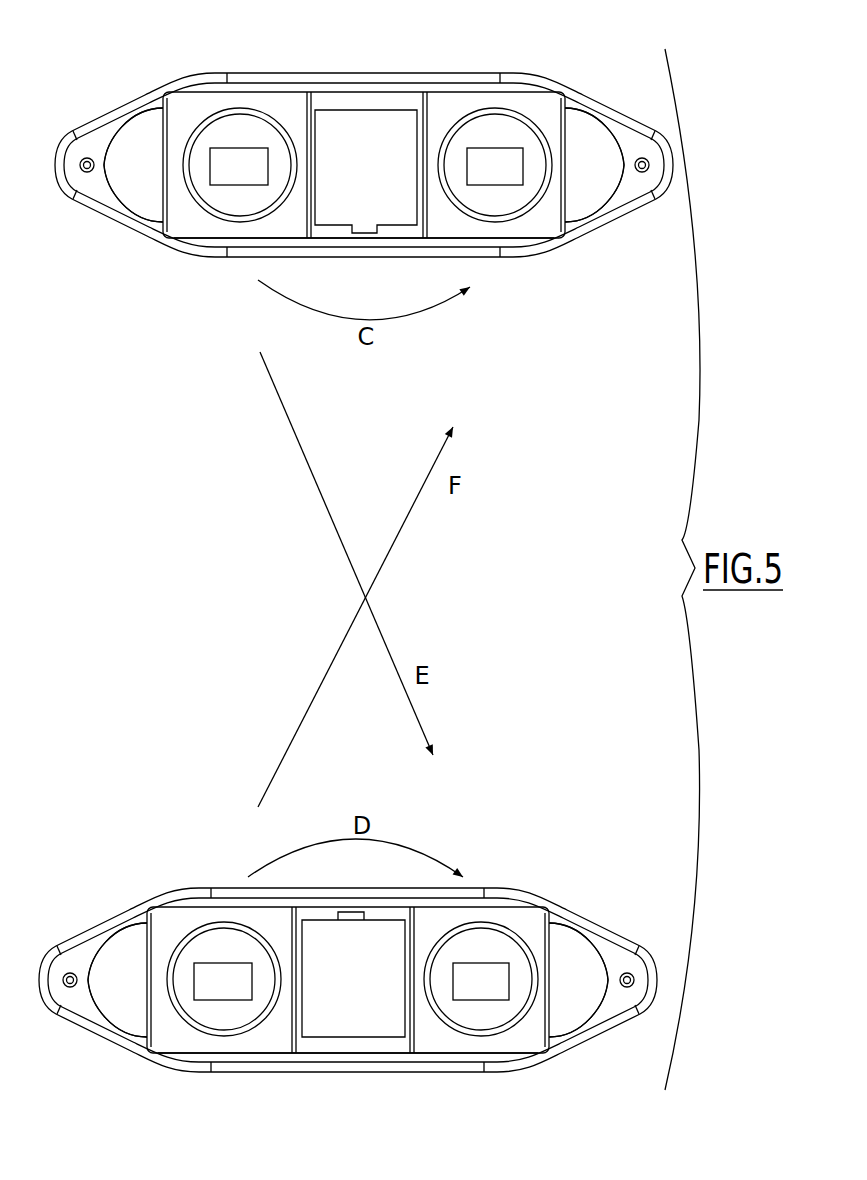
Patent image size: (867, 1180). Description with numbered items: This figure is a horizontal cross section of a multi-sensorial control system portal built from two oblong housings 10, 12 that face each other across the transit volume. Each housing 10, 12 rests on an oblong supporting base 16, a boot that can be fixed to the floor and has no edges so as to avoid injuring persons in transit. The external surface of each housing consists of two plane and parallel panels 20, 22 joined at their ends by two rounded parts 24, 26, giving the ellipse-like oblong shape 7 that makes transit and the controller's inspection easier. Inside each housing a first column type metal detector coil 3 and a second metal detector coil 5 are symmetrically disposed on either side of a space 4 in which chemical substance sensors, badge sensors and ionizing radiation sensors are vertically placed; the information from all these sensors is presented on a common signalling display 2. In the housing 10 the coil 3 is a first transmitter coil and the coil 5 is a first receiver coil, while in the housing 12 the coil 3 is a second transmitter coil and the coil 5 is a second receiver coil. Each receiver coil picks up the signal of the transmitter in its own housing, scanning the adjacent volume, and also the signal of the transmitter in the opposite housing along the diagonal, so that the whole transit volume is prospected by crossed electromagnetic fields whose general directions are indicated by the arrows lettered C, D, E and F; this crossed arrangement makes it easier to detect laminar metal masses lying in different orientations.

The signalling display 2 is at (356, 572).
The first column type metal detector 3 is at (239, 572).
The space between the metal detectors 4 is at (361, 573).
The second metal detector 5 is at (481, 572).
The oblong shape housing 7 is at (362, 572).
The housing 10 is at (364, 133).
The housing 12 is at (348, 1012).
The base of support 16 is at (55, 572).
The plane panel 20 is at (356, 541).
The plane panel 22 is at (356, 679).
The rounded part 24 is at (108, 572).
The rounded part 26 is at (609, 579).